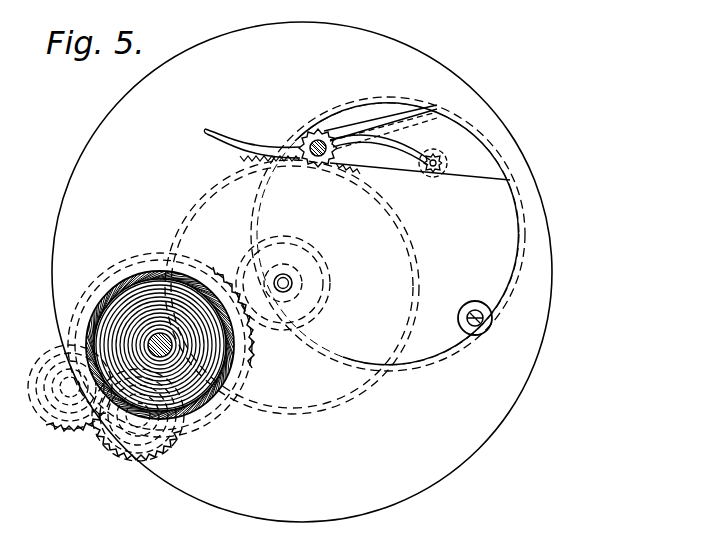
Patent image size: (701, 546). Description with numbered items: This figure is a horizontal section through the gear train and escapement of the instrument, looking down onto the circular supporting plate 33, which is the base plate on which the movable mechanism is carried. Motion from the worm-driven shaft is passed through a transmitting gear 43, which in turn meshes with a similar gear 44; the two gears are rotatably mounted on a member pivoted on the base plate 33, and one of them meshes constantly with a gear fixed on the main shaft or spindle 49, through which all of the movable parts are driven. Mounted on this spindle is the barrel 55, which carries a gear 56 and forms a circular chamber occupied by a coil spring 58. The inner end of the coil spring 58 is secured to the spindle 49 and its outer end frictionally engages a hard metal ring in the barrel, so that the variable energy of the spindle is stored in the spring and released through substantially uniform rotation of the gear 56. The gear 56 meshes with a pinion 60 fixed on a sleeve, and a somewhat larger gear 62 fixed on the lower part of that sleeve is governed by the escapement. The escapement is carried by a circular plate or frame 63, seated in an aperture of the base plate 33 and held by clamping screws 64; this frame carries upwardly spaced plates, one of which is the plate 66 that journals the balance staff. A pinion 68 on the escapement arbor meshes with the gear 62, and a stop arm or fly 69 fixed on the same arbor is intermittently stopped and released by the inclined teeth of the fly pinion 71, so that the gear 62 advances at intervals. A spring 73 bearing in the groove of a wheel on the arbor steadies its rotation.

The circular supporting plate 33 is at (503, 386).
The transmitting gear 43 is at (133, 453).
The gear 44 is at (55, 425).
The main shaft or spindle 49 is at (163, 333).
The barrel 55 is at (210, 400).
The gear 56 is at (217, 275).
The coil spring 58 is at (212, 417).
The pinion 60 is at (272, 323).
The gear 62 is at (315, 397).
The circular plate or frame 63 is at (503, 259).
The clamping screws 64 is at (478, 322).
The plate or flange 66 is at (463, 148).
The pinion 68 is at (318, 128).
The stop arm or fly 69 is at (247, 150).
The toothed wheel or fly pinion 71 is at (445, 174).
The spring 73 is at (398, 113).